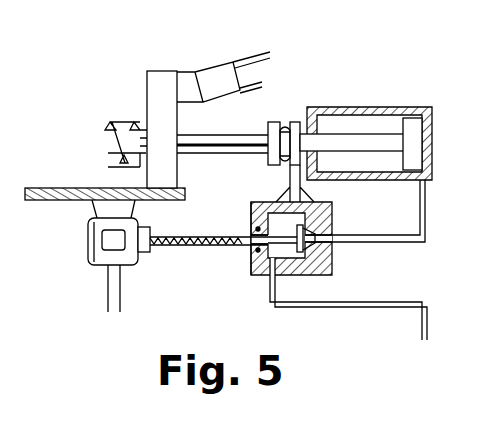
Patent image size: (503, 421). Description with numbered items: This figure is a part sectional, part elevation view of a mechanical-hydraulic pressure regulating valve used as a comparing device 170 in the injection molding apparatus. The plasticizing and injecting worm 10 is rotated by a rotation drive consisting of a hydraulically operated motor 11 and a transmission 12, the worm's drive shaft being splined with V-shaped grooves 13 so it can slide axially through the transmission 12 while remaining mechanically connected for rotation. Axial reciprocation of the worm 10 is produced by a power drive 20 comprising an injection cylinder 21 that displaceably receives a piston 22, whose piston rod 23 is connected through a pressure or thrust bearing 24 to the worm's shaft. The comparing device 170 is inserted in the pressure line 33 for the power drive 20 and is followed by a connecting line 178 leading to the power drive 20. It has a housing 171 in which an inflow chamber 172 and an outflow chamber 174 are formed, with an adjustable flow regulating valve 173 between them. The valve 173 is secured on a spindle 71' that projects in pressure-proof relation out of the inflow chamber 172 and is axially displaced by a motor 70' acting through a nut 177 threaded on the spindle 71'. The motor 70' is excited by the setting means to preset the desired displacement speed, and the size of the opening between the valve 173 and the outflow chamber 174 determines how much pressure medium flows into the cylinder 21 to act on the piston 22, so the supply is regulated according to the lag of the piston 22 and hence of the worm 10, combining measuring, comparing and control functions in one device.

The plasticizing and injecting worm 10 is at (112, 146).
The hydraulically operated motor 11 is at (213, 80).
The transmission 12 is at (162, 84).
The V-shaped grooves 13 is at (231, 136).
The power drive 20 is at (367, 115).
The injection cylinder 21 is at (319, 108).
The piston 22 is at (410, 120).
The piston rod 23 is at (373, 137).
The pressure or thrust bearing 24 is at (285, 114).
The pressure line 33 is at (422, 322).
The motor 70' is at (106, 247).
The spindle 71' is at (209, 255).
The comparing device 170 is at (298, 244).
The housing 171 is at (254, 200).
The inflow chamber 172 is at (272, 252).
The adjustable flow regulating valve 173 is at (322, 254).
The outflow chamber 174 is at (322, 222).
The nut 177 is at (146, 262).
The connecting line 178 is at (425, 218).